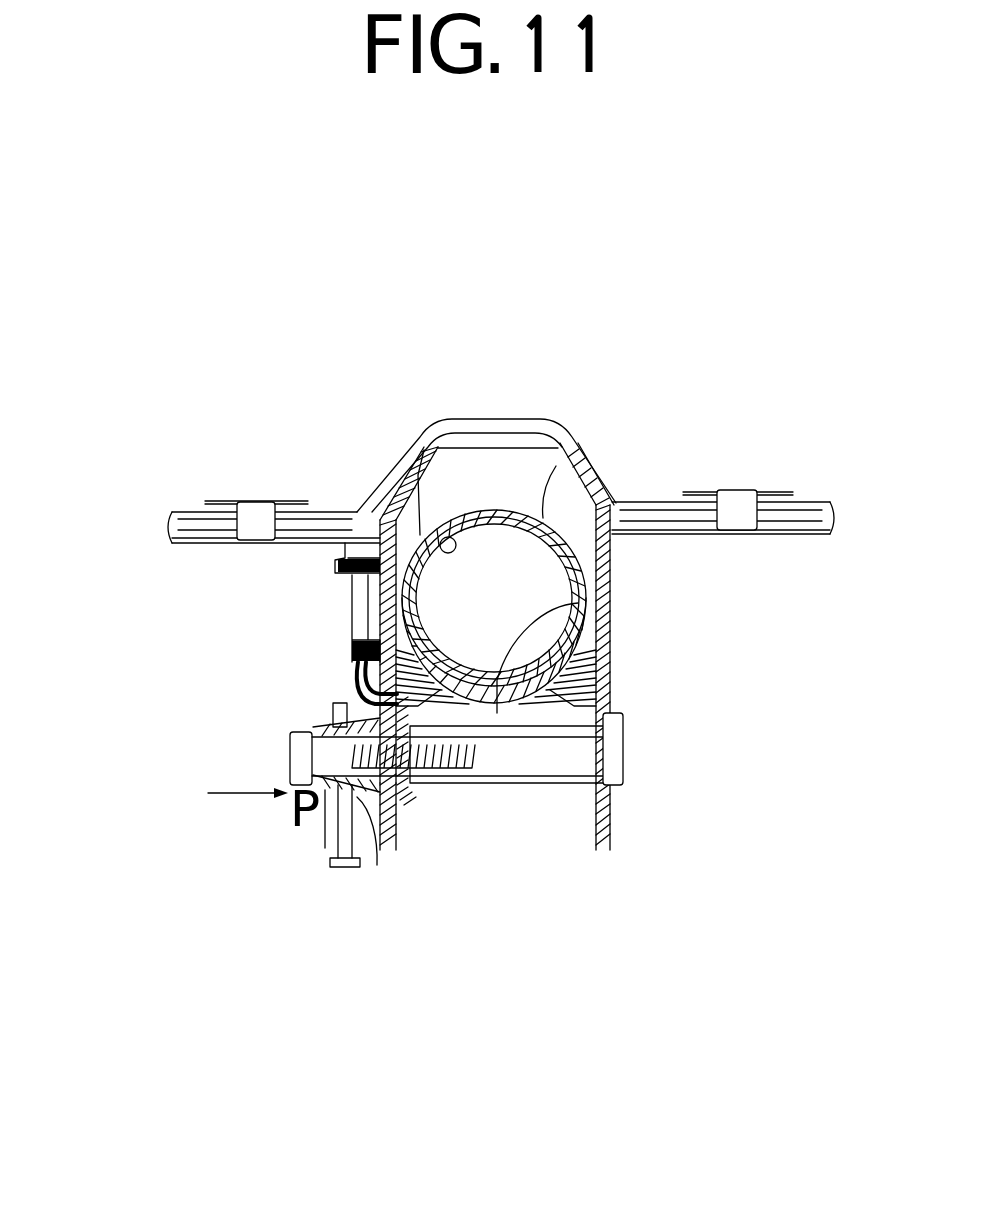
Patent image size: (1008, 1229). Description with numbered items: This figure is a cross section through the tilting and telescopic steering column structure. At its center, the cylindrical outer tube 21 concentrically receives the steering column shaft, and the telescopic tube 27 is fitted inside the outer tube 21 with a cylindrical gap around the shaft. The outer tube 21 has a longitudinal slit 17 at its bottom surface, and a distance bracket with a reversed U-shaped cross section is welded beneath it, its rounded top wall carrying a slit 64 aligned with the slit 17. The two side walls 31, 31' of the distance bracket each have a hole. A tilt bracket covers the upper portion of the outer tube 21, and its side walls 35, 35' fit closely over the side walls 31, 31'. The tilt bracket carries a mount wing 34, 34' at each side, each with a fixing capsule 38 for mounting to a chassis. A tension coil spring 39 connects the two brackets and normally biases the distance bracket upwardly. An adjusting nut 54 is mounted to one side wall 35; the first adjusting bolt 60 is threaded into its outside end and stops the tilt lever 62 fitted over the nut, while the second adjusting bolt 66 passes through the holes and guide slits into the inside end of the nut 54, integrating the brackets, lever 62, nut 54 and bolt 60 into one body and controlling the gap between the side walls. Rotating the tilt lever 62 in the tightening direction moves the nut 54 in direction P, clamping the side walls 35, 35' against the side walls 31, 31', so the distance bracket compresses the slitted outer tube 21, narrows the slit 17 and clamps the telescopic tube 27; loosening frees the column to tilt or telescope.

The longitudinal slit 17 is at (612, 612).
The outer tube 21 is at (582, 440).
The telescopic tube 27 is at (405, 448).
The side wall of the distance bracket 31 is at (407, 886).
The side wall of the distance bracket 31' is at (588, 886).
The mount wing 34 is at (215, 473).
The mount wing 34' is at (759, 451).
The side wall of the tilt bracket 35 is at (288, 662).
The side wall of the tilt bracket 35' is at (701, 644).
The fixing capsule 38 is at (232, 500).
The tension coil spring 39 is at (345, 572).
The adjusting nut 54 is at (378, 812).
The first adjusting bolt 60 is at (292, 757).
The tilt lever 62 is at (338, 840).
The slit 64 is at (510, 790).
The second adjusting bolt 66 is at (625, 750).